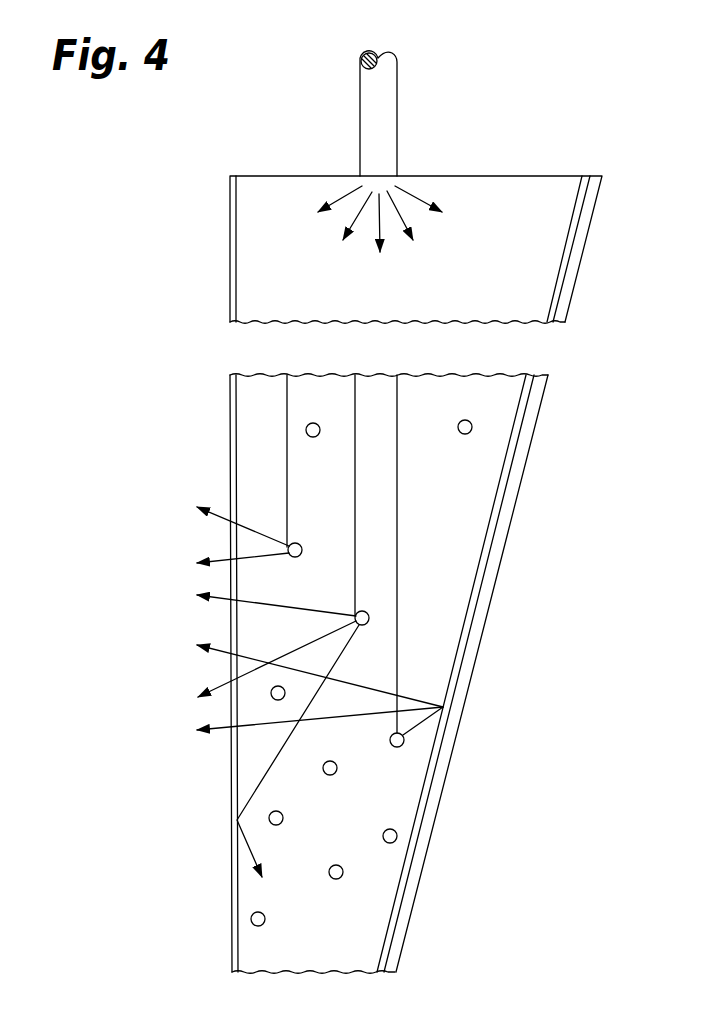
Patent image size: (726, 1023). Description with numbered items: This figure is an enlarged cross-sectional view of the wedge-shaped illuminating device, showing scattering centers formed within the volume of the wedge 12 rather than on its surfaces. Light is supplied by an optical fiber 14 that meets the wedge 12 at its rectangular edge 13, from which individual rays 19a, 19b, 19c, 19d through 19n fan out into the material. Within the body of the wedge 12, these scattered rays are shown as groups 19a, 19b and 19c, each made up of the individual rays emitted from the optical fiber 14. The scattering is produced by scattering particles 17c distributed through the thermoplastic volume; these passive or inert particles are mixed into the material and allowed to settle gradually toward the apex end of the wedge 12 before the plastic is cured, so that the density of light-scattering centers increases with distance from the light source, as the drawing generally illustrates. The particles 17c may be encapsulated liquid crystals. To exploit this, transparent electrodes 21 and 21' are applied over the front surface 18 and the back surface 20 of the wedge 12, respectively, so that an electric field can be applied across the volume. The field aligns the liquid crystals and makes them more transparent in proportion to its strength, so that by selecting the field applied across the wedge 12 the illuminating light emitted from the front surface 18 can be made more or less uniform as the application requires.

The wedge 12 is at (328, 952).
The rectangular edge 13 is at (528, 176).
The optical fiber 14 is at (397, 90).
The scattering particles 17c is at (313, 423).
The front surface 18 is at (236, 407).
The light ray 19a is at (315, 208).
The light ray 19b is at (340, 238).
The light ray 19c is at (380, 256).
The light ray 19d is at (418, 242).
The light ray 19n is at (444, 212).
The back surface 20 is at (480, 645).
The transparent electrode 21 is at (204, 673).
The transparent electrode 21' is at (472, 673).